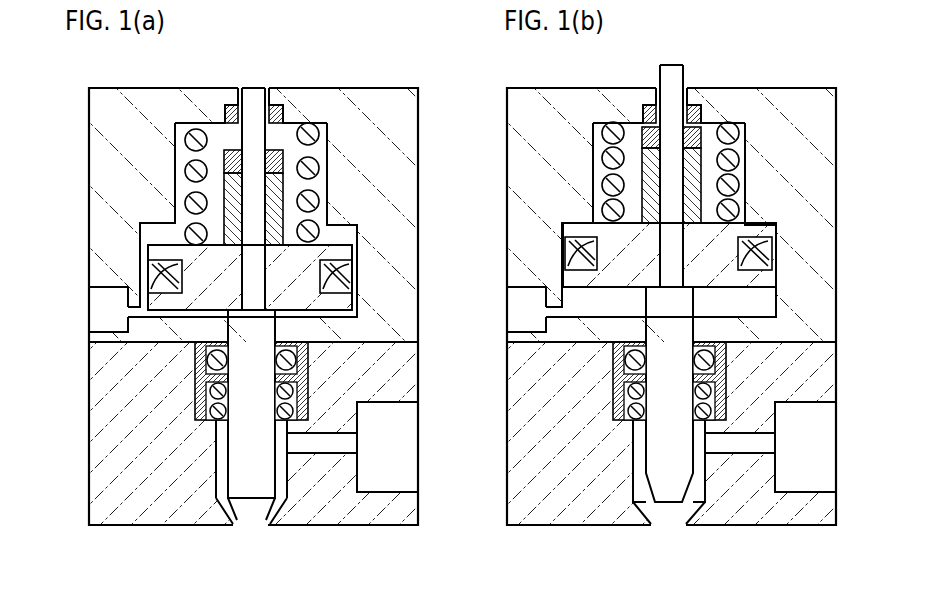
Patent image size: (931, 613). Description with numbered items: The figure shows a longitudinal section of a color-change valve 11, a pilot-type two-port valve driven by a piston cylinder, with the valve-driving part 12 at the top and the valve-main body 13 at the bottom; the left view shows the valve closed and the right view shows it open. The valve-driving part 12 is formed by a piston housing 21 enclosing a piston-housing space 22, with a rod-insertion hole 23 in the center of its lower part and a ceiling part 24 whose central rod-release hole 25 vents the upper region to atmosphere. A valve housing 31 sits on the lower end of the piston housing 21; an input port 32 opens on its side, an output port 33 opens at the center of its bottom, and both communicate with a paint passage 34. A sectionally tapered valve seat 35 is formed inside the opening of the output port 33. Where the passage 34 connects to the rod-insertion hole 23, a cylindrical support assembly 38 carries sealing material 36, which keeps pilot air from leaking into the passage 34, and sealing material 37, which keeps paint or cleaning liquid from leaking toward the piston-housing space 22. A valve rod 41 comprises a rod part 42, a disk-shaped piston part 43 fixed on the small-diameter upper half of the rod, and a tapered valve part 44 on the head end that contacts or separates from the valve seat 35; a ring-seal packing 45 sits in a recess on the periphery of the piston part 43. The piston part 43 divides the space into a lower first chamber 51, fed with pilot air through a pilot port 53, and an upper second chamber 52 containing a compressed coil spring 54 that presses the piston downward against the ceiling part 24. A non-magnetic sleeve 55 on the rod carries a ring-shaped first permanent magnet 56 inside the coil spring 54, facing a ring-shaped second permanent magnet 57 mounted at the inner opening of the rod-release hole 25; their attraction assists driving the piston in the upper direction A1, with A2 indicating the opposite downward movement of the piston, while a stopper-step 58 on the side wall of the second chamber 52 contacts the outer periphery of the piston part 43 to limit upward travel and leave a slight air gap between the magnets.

In FIG. 1A, the color-change valve 11 is at (352, 89).
In FIG. 1B, the color-change valve 11 is at (671, 281).
In FIG. 1A, the valve-driving part 12 is at (88, 139).
In FIG. 1B, the valve-driving part 12 is at (658, 306).
In FIG. 1A, the valve-main body 13 is at (92, 497).
In FIG. 1B, the valve-main body 13 is at (660, 306).
In FIG. 1A, the piston housing 21 is at (405, 128).
In FIG. 1B, the piston housing 21 is at (686, 214).
In FIG. 1A, the piston-housing space 22 is at (180, 162).
In FIG. 1B, the piston-housing space 22 is at (661, 220).
In FIG. 1A, the rod-insertion hole 23 is at (255, 329).
In FIG. 1B, the rod-insertion hole 23 is at (771, 323).
In FIG. 1A, the ceiling part 24 is at (197, 93).
In FIG. 1B, the ceiling part 24 is at (665, 81).
In FIG. 1A, the rod-release hole 25 is at (243, 97).
In FIG. 1B, the rod-release hole 25 is at (653, 71).
In FIG. 1A, the valve housing 31 is at (110, 430).
In FIG. 1B, the valve housing 31 is at (660, 414).
In FIG. 1A, the input port 32 is at (390, 490).
In FIG. 1B, the input port 32 is at (824, 454).
In FIG. 1A, the output port 33 is at (258, 524).
In FIG. 1B, the output port 33 is at (697, 546).
In FIG. 1A, the passage 34 is at (270, 468).
In FIG. 1B, the passage 34 is at (708, 491).
In FIG. 1A, the valve seat 35 is at (234, 522).
In FIG. 1B, the valve seat 35 is at (657, 534).
In FIG. 1A, the sealing material 36 is at (206, 370).
In FIG. 1B, the sealing material 36 is at (631, 366).
In FIG. 1A, the sealing material 37 is at (207, 392).
In FIG. 1B, the sealing material 37 is at (632, 408).
In FIG. 1A, the support assembly 38 is at (307, 368).
In FIG. 1B, the support assembly 38 is at (692, 381).
In FIG. 1A, the valve rod 41 is at (252, 84).
In FIG. 1B, the valve rod 41 is at (692, 167).
In FIG. 1A, the rod part 42 is at (241, 451).
In FIG. 1B, the rod part 42 is at (669, 394).
In FIG. 1A, the piston part 43 is at (204, 291).
In FIG. 1B, the piston part 43 is at (673, 300).
In FIG. 1A, the valve part 44 is at (250, 514).
In FIG. 1B, the valve part 44 is at (665, 554).
In FIG. 1A, the ring-seal packing 45 is at (348, 278).
In FIG. 1B, the ring-seal packing 45 is at (690, 269).
In FIG. 1A, the first chamber 51 is at (162, 317).
In FIG. 1B, the first chamber 51 is at (526, 341).
In FIG. 1A, the second chamber 52 is at (175, 207).
In FIG. 1B, the second chamber 52 is at (533, 203).
In FIG. 1A, the pilot port 53 is at (120, 293).
In FIG. 1B, the pilot port 53 is at (510, 309).
In FIG. 1A, the coil spring 54 is at (284, 163).
In FIG. 1B, the coil spring 54 is at (726, 153).
In FIG. 1A, the sleeve 55 is at (275, 222).
In FIG. 1B, the sleeve 55 is at (720, 185).
In FIG. 1A, the first permanent magnet 56 is at (198, 173).
In FIG. 1B, the first permanent magnet 56 is at (667, 168).
In FIG. 1A, the second permanent magnet 57 is at (227, 112).
In FIG. 1B, the second permanent magnet 57 is at (662, 106).
In FIG. 1A, the stopper-step 58 is at (160, 222).
In FIG. 1B, the stopper-step 58 is at (526, 269).
In FIG. 1A, the upper direction A1 is at (430, 160).
In FIG. 1B, the upper direction A1 is at (853, 198).
In FIG. 1A, the pin advancing direction A2 is at (430, 464).
In FIG. 1B, the pin advancing direction A2 is at (851, 426).